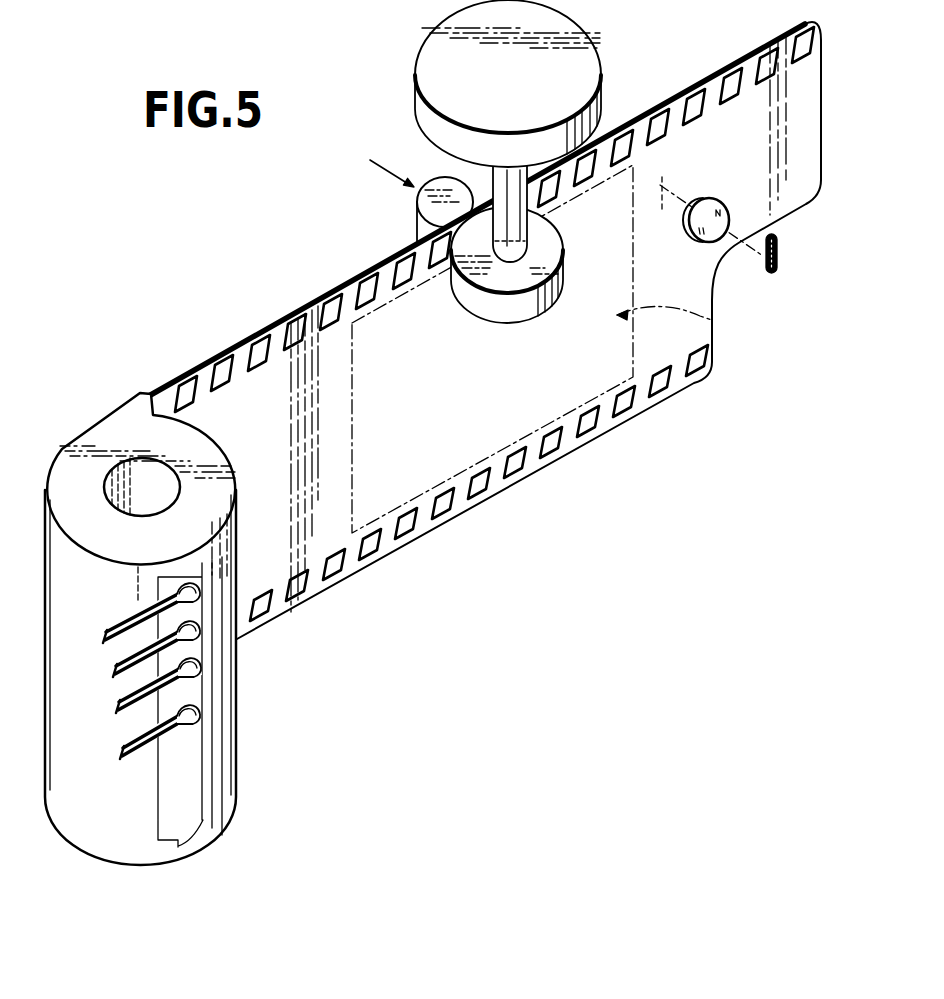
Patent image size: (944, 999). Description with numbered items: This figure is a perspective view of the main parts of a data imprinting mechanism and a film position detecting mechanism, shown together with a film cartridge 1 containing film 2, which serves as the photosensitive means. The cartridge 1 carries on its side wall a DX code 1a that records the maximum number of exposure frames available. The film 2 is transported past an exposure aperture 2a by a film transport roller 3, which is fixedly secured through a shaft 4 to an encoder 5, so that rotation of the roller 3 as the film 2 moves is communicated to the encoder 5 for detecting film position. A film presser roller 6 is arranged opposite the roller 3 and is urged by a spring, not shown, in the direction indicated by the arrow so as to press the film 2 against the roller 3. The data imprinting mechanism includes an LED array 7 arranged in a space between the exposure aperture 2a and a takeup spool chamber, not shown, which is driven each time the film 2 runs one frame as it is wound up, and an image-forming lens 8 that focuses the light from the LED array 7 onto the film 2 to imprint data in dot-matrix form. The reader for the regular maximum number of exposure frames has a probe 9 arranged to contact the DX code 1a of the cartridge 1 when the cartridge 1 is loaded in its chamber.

The film cartridge 1 is at (196, 655).
The DX code 1a is at (190, 817).
The film 2 is at (500, 330).
The exposure aperture 2a is at (712, 320).
The film transport roller 3 is at (503, 322).
The shaft 4 is at (493, 182).
The encoder 5 is at (418, 50).
The film presser roller 6 is at (418, 208).
The LED array 7 is at (778, 255).
The image-forming lens 8 is at (709, 199).
The probe 9 is at (104, 642).